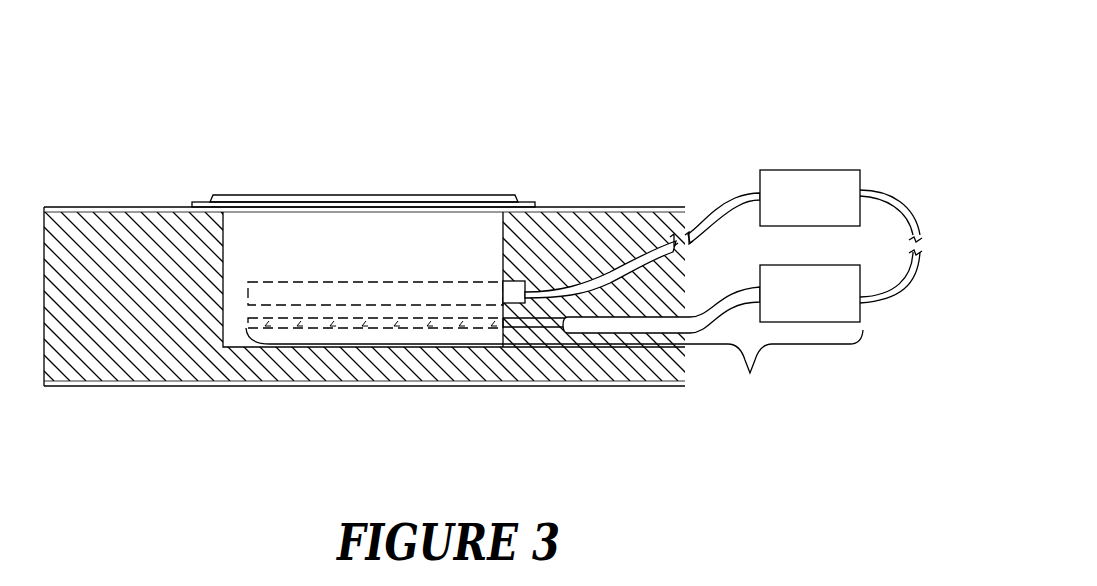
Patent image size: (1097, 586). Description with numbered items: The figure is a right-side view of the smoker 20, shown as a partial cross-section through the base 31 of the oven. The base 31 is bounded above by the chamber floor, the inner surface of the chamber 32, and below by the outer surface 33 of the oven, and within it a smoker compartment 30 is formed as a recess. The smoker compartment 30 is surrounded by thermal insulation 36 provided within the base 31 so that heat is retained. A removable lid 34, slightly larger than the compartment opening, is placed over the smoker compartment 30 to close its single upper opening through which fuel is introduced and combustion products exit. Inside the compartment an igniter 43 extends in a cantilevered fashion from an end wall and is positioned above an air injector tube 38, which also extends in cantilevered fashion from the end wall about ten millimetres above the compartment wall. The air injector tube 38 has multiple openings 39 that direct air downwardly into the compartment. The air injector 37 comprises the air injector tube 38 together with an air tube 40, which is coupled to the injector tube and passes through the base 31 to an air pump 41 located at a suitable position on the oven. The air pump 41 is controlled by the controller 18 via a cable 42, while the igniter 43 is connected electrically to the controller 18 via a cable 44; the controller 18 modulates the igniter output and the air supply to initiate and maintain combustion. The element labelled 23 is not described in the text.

The smoker 20 is at (341, 80).
The lid 34 is at (243, 192).
The igniter 43 is at (422, 292).
The cable 44 is at (558, 252).
The inner surface of the chamber 32 is at (592, 207).
The base 31 is at (635, 223).
The air tube 40 is at (742, 195).
The controller 18 is at (838, 178).
The connecting cable 23 is at (915, 210).
The cable 42 is at (913, 283).
The air pump 41 is at (837, 310).
The air injector 37 is at (683, 349).
The thermal insulation 36 is at (123, 365).
The smoker compartment 30 is at (230, 337).
The air injector tube 38 is at (310, 327).
The openings 39 is at (393, 342).
The outer surface 33 is at (507, 385).